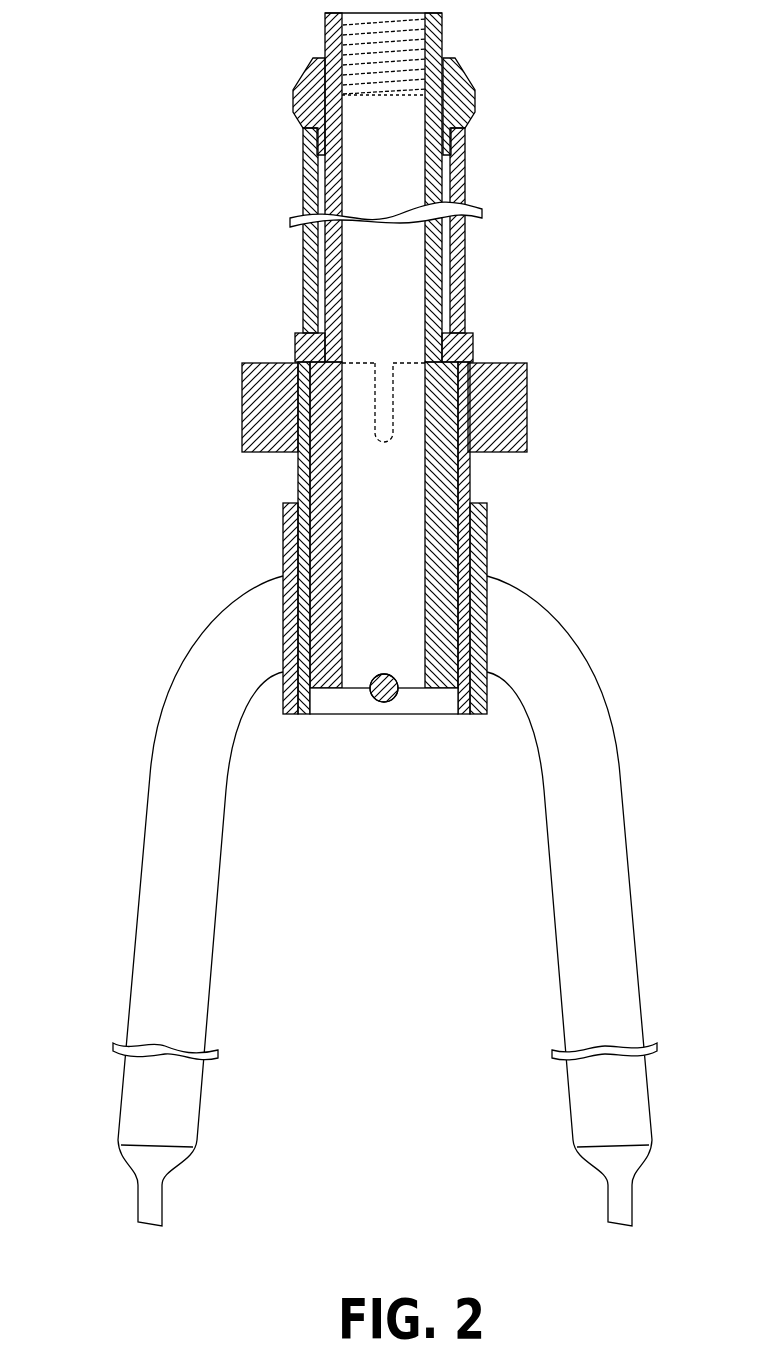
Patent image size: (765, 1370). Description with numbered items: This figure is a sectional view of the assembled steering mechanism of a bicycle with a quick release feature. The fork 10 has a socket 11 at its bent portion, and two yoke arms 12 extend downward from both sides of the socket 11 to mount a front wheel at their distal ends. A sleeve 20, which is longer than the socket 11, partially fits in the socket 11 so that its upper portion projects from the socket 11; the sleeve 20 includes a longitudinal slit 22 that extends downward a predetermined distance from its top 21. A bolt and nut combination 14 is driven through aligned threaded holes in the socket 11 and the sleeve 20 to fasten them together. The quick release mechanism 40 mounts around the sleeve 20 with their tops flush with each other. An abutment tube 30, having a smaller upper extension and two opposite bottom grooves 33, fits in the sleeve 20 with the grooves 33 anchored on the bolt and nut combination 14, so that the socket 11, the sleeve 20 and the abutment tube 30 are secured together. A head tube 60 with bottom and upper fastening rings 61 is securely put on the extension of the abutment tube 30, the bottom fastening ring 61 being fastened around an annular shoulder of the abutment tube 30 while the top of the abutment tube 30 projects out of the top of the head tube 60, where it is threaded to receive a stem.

The fork 10 is at (218, 584).
The socket 11 is at (487, 540).
The yoke arms 12 is at (162, 795).
The bolt and nut combination 14 is at (377, 703).
The sleeve 20 is at (298, 528).
The top 21 is at (405, 362).
The longitudinal slit 22 is at (363, 405).
The abutment tube 30 is at (462, 292).
The bottom grooves 33 is at (400, 694).
The quick release mechanism 40 is at (205, 403).
The head tube 60 is at (460, 242).
The fastening rings 61 is at (473, 108).